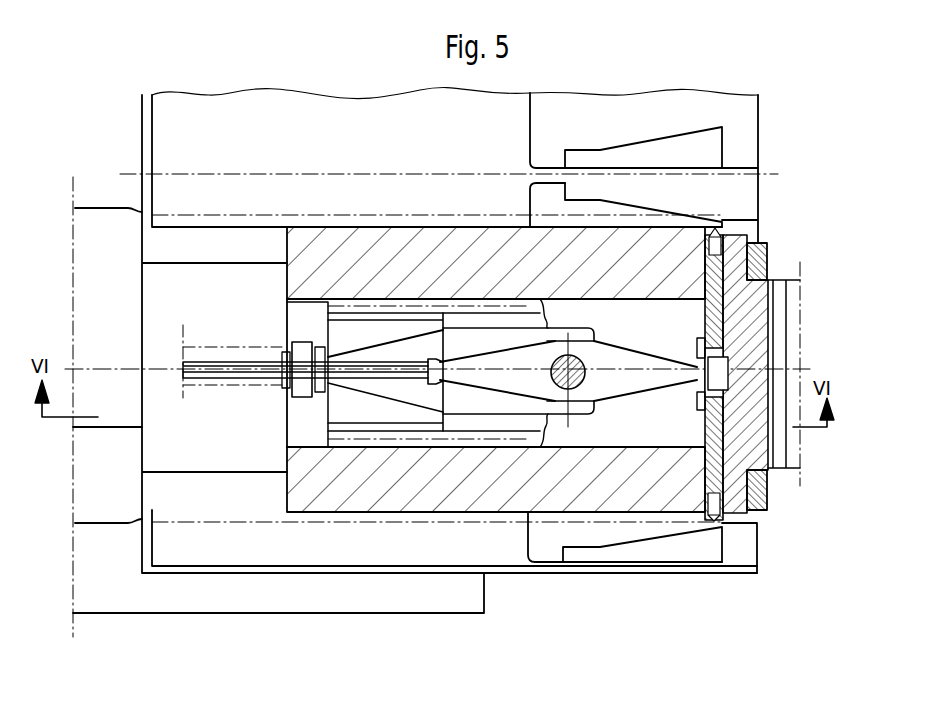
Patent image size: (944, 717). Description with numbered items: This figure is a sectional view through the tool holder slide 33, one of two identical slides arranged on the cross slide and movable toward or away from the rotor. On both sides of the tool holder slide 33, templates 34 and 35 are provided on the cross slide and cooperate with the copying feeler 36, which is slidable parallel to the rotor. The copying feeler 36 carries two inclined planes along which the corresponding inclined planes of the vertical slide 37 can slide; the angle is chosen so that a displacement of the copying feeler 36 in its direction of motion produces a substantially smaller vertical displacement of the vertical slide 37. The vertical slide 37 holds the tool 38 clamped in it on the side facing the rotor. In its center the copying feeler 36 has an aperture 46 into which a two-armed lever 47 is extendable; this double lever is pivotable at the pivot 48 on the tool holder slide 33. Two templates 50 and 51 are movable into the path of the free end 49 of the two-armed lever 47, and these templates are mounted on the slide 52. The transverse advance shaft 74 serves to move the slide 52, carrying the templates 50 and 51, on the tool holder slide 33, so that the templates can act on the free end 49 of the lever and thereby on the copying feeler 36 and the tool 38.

The tool holder slide 33 is at (498, 278).
The template 34 is at (705, 208).
The template 35 is at (672, 548).
The copying feeler 36 is at (757, 272).
The vertical slide 37 is at (762, 512).
The tool 38 is at (792, 468).
The aperture 46 is at (697, 380).
The two-armed lever 47 is at (608, 363).
The pivot 48 is at (582, 388).
The free end 49 is at (437, 377).
The template 50 is at (387, 330).
The template 51 is at (368, 407).
The slide 52 is at (370, 306).
The transverse advance shaft 74 is at (241, 366).